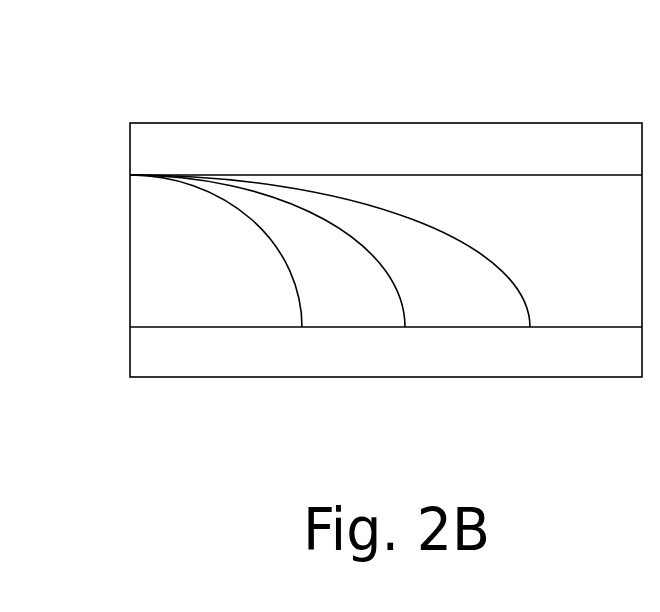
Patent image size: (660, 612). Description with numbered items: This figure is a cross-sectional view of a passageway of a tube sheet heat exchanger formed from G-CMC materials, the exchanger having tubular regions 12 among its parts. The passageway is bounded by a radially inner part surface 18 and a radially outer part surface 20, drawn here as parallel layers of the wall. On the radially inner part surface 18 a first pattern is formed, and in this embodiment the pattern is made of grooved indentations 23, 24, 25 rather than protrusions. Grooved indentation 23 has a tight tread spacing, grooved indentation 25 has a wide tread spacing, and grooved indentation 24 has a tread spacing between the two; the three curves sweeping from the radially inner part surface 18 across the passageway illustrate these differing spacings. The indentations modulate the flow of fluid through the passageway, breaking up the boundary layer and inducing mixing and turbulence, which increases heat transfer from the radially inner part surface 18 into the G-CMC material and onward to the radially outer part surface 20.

The tubular region 12 is at (575, 123).
The radially inner part surface 18 is at (152, 262).
The radially outer part surface 20 is at (278, 123).
The grooved indentation 23 is at (242, 208).
The grooved indentation 24 is at (327, 215).
The grooved indentation 25 is at (438, 229).